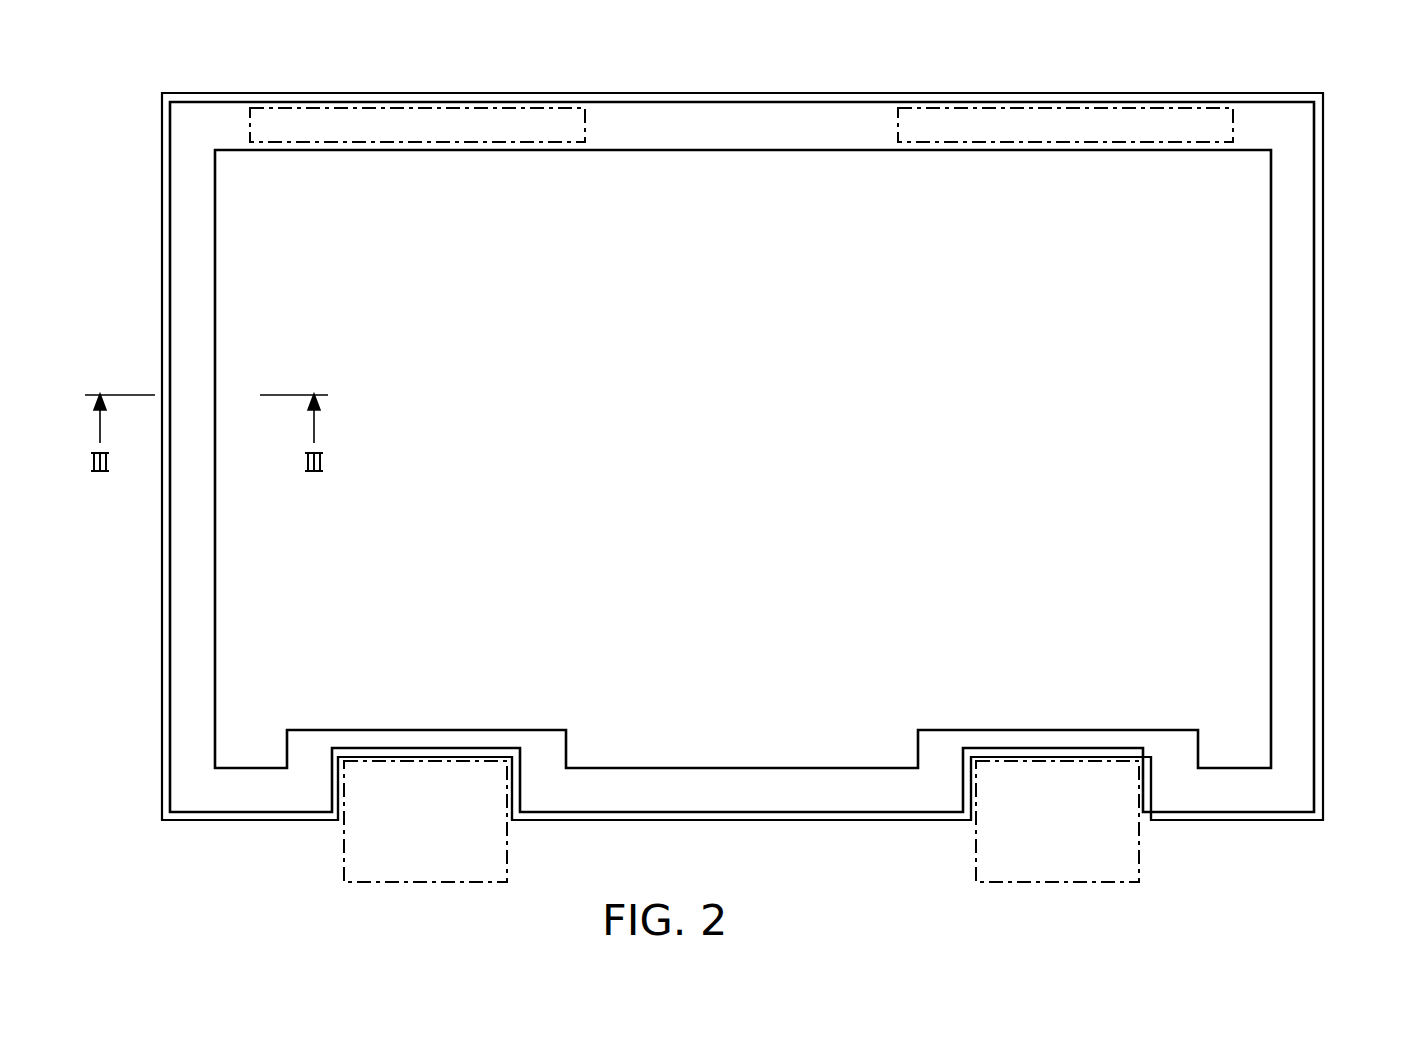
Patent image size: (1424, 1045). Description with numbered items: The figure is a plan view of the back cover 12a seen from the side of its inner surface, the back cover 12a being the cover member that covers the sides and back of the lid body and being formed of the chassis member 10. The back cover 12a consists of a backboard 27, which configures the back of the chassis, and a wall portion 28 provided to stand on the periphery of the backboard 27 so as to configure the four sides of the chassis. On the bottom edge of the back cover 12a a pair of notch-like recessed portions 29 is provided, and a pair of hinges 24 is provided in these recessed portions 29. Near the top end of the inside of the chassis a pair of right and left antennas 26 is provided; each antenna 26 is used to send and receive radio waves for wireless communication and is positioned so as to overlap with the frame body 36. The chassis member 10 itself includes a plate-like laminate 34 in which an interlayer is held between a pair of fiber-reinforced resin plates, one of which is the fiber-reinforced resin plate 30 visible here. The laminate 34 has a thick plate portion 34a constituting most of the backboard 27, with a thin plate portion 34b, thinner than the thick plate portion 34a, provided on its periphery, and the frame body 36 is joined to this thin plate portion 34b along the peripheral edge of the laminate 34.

The chassis member 10 is at (696, 435).
The back cover 12a is at (110, 76).
The hinge 24 is at (402, 882).
The antenna 26 is at (402, 106).
The backboard 27 is at (333, 276).
The wall portion 28 is at (745, 100).
The recessed portion 29 is at (337, 795).
The fiber-reinforced resin plate 30 is at (1257, 217).
The laminate 34 is at (1177, 398).
The thick plate portion 34a is at (835, 615).
The thin plate portion 34b is at (652, 133).
The frame body 36 is at (1290, 511).